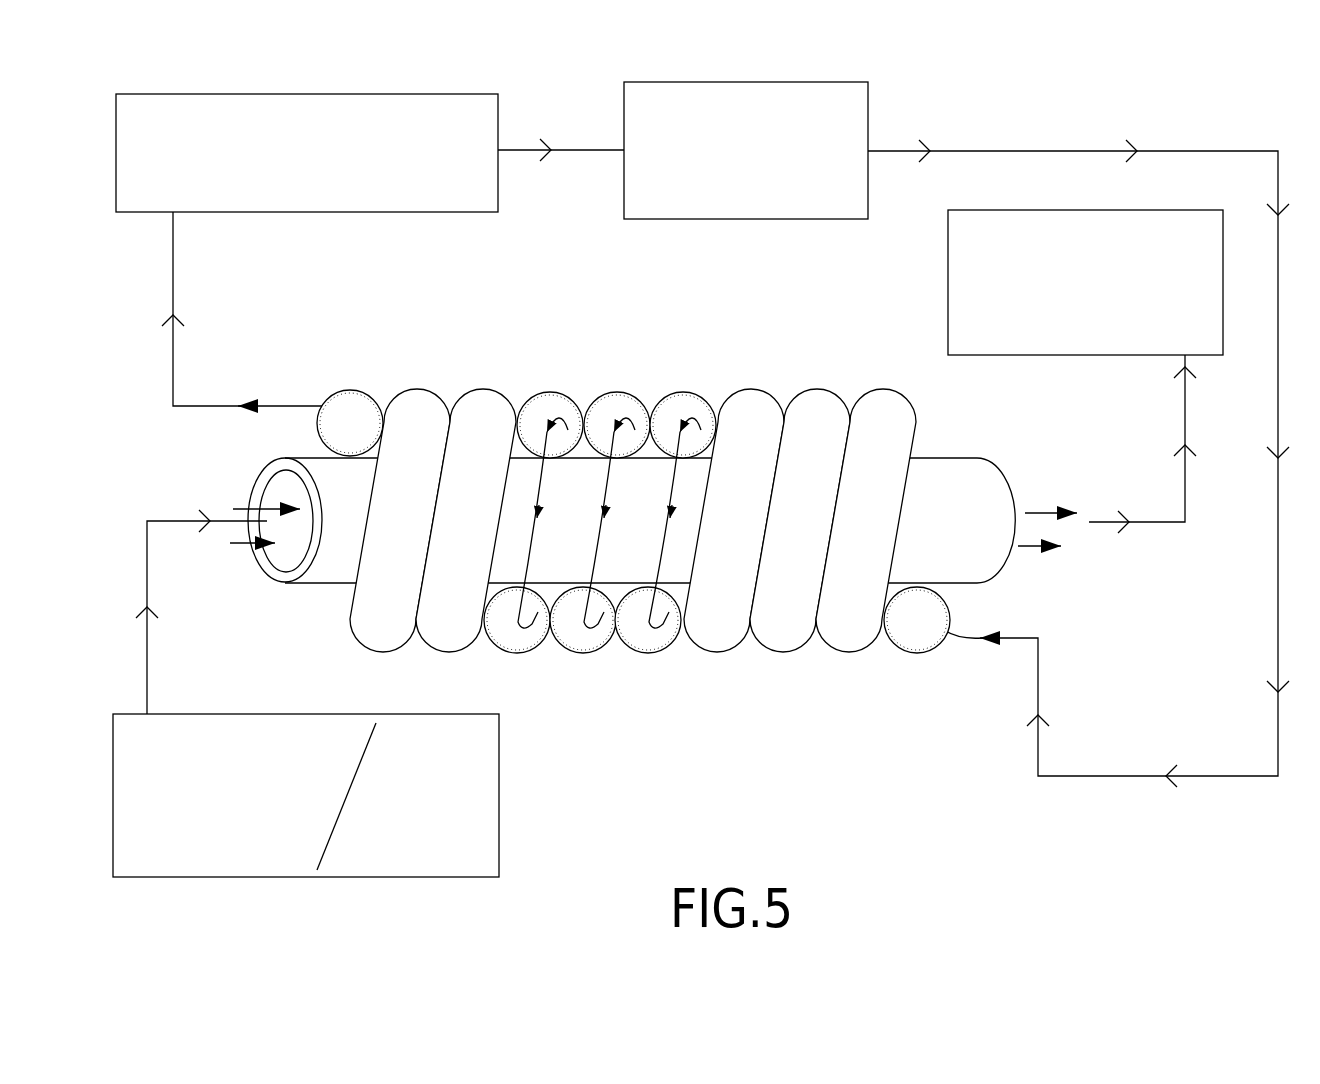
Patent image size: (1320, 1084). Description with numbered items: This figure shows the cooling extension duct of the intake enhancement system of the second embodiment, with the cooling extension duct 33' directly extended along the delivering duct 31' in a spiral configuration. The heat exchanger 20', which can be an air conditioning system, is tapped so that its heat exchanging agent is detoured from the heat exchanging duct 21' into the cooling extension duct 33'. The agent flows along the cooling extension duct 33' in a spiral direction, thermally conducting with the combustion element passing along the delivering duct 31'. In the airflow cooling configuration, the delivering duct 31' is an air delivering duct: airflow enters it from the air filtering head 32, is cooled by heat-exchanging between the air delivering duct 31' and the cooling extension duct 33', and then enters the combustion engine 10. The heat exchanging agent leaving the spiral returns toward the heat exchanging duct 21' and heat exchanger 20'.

The heat exchanging duct 21' is at (307, 153).
The heat exchanger 20' is at (746, 150).
The combustion engine 10 is at (1085, 282).
The air filtering head 32 is at (306, 795).
The cooling extension duct 33' is at (633, 479).
The delivering duct 31' is at (596, 572).